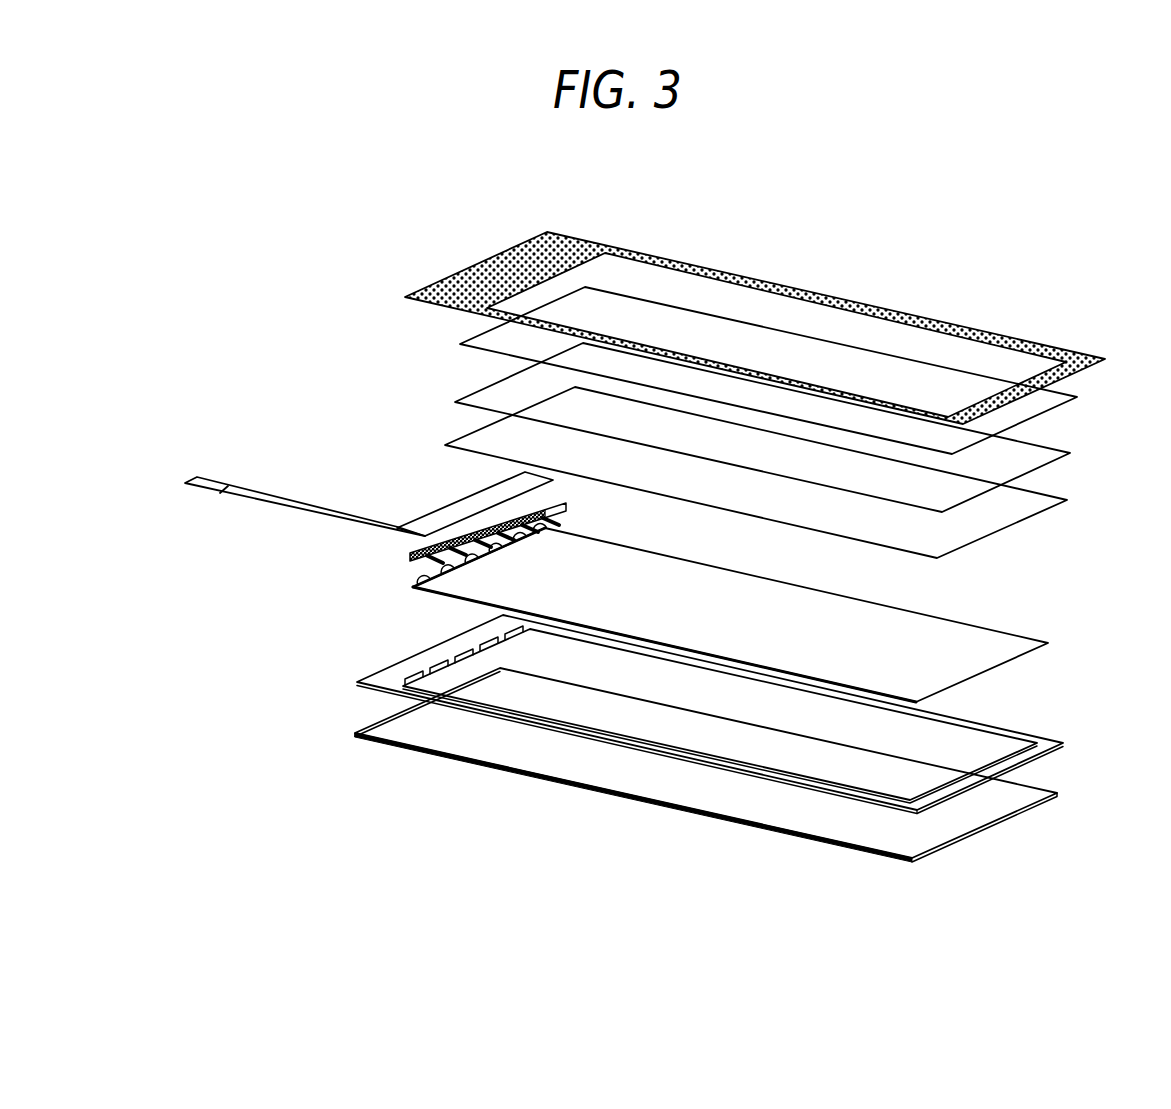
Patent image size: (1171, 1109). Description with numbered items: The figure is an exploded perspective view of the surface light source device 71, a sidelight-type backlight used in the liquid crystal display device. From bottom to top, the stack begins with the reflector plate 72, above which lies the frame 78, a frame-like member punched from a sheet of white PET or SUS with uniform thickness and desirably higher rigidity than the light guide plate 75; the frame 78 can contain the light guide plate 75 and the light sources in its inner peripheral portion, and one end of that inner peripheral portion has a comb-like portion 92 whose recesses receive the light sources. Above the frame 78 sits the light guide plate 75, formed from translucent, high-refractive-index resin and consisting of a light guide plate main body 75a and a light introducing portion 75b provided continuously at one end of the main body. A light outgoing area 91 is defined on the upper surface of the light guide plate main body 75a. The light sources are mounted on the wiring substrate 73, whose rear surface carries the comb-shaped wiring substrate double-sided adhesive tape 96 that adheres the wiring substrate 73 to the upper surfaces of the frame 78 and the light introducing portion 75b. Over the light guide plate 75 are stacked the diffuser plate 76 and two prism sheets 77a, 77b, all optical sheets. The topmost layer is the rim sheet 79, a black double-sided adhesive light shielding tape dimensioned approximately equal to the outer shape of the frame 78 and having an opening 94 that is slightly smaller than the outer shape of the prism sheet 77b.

The surface light source device 71 is at (1003, 253).
The reflector plate 72 is at (683, 785).
The wiring substrate 73 is at (450, 510).
The light guide plate 75 is at (676, 609).
The light guide plate main body 75a is at (747, 610).
The light introducing portion 75b is at (418, 585).
The diffuser plate 76 is at (980, 517).
The prism sheet 77a is at (1005, 462).
The prism sheet 77b is at (1025, 412).
The frame 78 is at (710, 733).
The rim sheet 79 is at (512, 267).
The light outgoing area 91 is at (663, 597).
The comb-like portion 92 is at (437, 672).
The opening 94 is at (797, 313).
The wiring substrate double-sided adhesive tape 96 is at (413, 557).